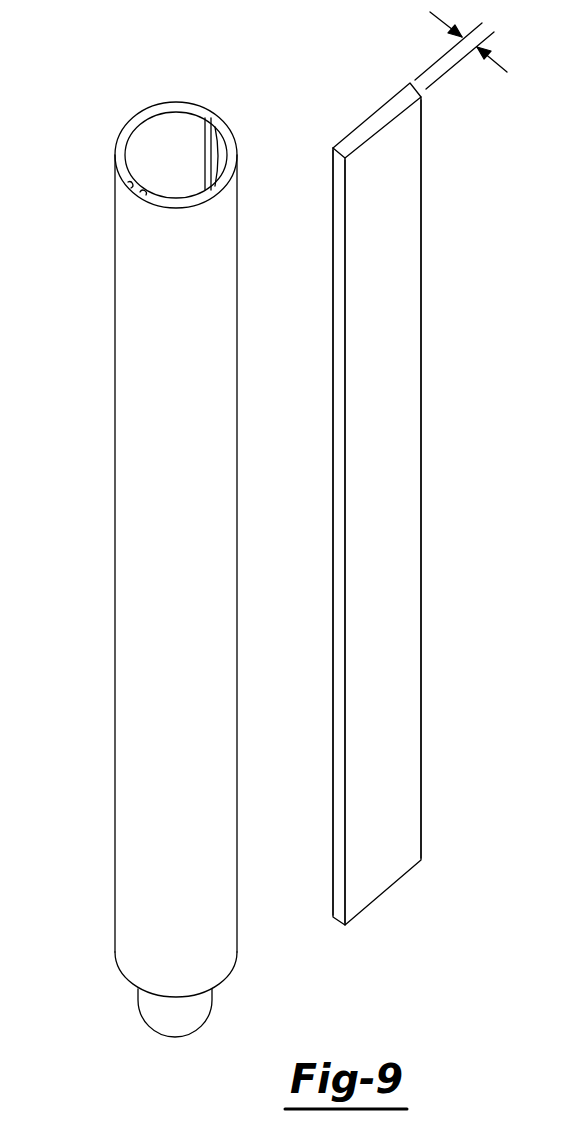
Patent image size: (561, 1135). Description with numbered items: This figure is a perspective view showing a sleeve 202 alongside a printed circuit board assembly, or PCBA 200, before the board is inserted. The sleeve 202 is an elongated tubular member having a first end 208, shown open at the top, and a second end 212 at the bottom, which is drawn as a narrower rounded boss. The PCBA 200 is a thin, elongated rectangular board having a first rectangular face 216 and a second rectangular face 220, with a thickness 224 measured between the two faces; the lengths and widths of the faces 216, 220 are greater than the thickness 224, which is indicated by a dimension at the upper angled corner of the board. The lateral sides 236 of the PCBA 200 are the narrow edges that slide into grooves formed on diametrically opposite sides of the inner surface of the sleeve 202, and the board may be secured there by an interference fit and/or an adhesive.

The printed circuit board assembly (PCBA) 200 is at (409, 468).
The sleeve 202 is at (137, 300).
The first end 208 is at (120, 158).
The second end 212 is at (197, 1005).
The first rectangular face 216 is at (382, 498).
The second rectangular face 220 is at (333, 260).
The thickness 224 is at (505, 72).
The lateral sides 236 is at (337, 345).